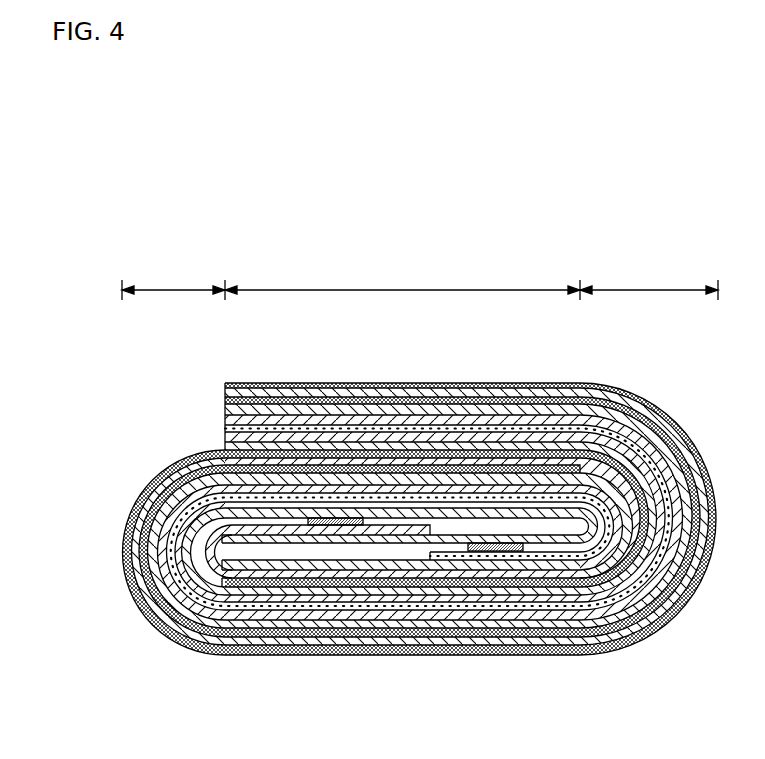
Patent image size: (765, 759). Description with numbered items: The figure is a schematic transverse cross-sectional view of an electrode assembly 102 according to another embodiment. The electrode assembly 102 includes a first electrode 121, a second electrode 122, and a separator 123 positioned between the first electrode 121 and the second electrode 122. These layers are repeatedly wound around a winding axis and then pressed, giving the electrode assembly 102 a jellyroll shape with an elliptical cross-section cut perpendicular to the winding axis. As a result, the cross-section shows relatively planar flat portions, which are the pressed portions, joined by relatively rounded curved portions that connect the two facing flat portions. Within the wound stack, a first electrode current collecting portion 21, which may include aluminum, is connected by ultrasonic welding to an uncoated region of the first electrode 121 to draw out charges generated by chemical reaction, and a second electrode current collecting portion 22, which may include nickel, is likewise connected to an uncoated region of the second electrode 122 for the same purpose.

The electrode assembly 102 is at (429, 195).
The first electrode 121 is at (273, 527).
The first electrode current collecting portion 21 is at (338, 523).
The second electrode 122 is at (452, 558).
The second electrode current collecting portion 22 is at (500, 549).
The separator 123 is at (222, 411).